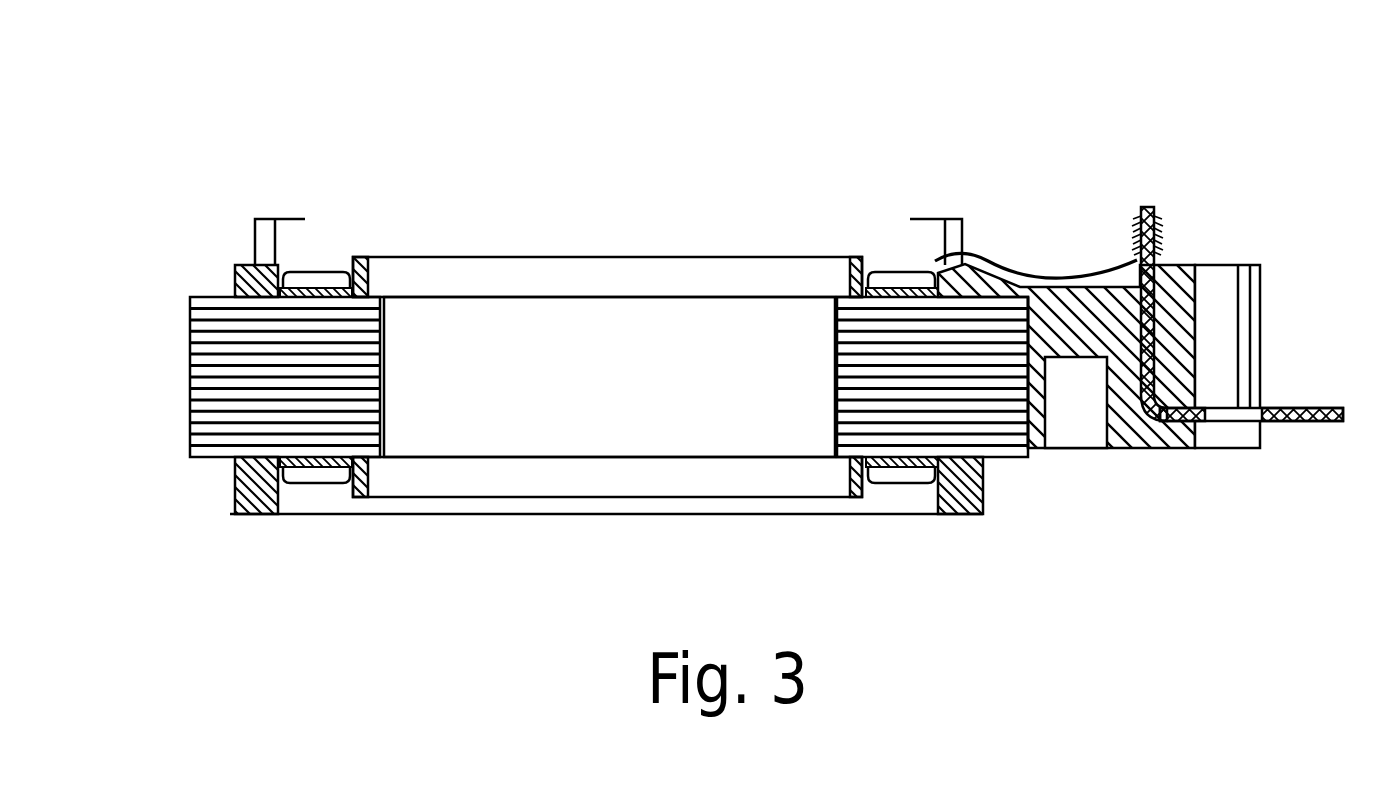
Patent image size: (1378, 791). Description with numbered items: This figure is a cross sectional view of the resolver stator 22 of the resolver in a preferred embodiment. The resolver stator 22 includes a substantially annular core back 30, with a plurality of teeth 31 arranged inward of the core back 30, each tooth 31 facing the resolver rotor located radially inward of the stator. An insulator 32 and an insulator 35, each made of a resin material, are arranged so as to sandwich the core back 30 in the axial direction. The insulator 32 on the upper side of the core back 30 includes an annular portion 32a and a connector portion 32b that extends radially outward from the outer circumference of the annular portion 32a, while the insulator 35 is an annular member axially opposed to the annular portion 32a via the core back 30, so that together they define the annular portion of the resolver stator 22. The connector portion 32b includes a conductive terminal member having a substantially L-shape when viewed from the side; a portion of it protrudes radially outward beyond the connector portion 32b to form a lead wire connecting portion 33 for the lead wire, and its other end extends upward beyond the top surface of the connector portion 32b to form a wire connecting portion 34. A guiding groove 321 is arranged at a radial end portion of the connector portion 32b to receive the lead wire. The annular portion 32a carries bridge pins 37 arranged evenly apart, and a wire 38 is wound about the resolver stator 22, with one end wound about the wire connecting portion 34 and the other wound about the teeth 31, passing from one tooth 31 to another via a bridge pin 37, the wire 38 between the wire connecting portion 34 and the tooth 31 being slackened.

The resolver stator 22 is at (1273, 143).
The core back 30 is at (190, 422).
The teeth 31 is at (384, 370).
The insulator 32 is at (1000, 280).
The annular portion 32a is at (233, 279).
The connector portion 32b is at (1132, 450).
The guiding groove 321 is at (1197, 297).
The lead wire connecting portion 33 is at (1325, 423).
The wire connecting portion 34 is at (1158, 208).
The insulator 35 is at (983, 490).
The bridge pin 37 is at (965, 220).
The wire 38 is at (1070, 272).